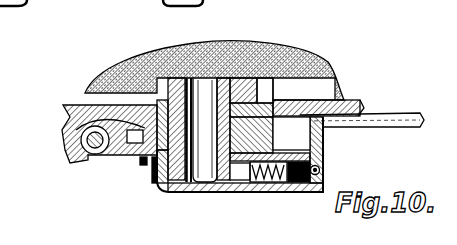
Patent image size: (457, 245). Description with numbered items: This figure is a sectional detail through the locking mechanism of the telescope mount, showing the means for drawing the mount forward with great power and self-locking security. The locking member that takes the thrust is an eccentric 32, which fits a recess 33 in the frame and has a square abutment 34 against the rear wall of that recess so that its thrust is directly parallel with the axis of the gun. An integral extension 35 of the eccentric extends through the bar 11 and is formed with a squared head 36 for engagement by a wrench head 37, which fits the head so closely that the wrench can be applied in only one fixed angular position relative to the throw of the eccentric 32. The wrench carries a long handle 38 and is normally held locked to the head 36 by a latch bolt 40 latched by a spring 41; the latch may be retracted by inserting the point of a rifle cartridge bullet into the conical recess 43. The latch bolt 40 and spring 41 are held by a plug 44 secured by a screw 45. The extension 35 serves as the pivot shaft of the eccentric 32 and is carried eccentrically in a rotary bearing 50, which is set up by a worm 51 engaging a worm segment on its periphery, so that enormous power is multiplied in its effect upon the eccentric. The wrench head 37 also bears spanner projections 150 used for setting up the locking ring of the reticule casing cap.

The bar 11 is at (78, 106).
The eccentric 32 is at (235, 82).
The recess 33 is at (165, 80).
The square abutment 34 is at (248, 78).
The integral extension 35 is at (263, 115).
The head 36 is at (183, 195).
The wrench head 37 is at (245, 192).
The handle 38 is at (402, 120).
The latch bolt 40 is at (215, 195).
The spring 41 is at (320, 195).
The conical recess 43 is at (270, 193).
The plug 44 is at (325, 162).
The screw 45 is at (325, 172).
The rotary bearing 50 is at (291, 133).
The worm 51 is at (78, 143).
The spanner projections 150 is at (146, 162).